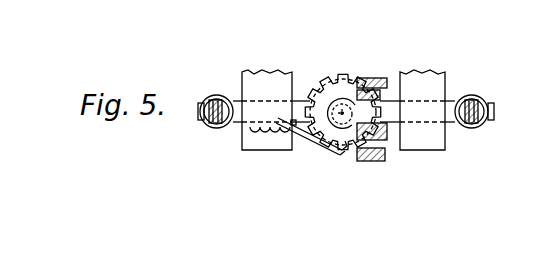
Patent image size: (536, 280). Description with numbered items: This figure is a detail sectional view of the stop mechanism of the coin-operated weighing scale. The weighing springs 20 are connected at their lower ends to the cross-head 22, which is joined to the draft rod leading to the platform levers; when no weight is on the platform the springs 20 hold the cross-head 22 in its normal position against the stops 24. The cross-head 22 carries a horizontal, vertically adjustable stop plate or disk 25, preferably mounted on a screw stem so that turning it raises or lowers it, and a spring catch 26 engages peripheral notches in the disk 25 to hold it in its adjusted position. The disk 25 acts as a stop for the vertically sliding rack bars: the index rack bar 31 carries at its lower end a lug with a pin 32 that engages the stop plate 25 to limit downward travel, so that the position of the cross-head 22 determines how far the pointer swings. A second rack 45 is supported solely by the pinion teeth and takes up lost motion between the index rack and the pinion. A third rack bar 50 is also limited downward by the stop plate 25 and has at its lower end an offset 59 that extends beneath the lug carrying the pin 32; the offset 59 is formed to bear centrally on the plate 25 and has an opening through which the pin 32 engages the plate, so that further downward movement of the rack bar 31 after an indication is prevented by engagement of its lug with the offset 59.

The weighing springs 20 is at (226, 96).
The cross-head 22 is at (459, 126).
The stops 24 is at (272, 72).
The stop plate or disk 25 is at (334, 80).
The spring catch 26 is at (342, 156).
The rack bar 31 is at (350, 107).
The pin 32 is at (337, 122).
The second rack 45 is at (383, 161).
The third rack bar 50 is at (371, 73).
The offset 59 is at (321, 94).